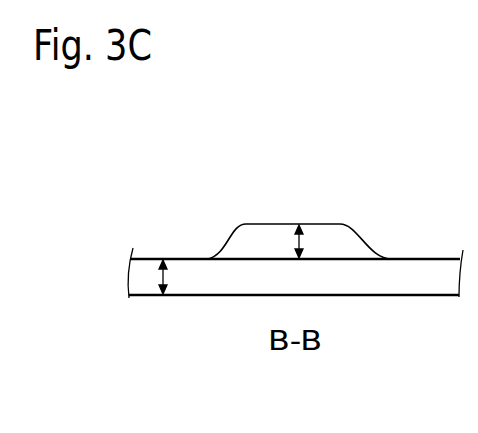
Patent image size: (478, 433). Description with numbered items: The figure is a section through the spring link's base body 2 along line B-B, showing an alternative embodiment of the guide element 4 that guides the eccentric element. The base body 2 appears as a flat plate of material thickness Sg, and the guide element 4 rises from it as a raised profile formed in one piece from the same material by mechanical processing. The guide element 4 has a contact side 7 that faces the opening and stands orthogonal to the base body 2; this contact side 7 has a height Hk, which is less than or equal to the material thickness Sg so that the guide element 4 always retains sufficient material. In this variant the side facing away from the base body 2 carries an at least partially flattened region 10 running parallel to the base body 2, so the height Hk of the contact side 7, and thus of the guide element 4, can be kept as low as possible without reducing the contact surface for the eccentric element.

The base body 2 is at (415, 270).
The guide element 4 is at (366, 244).
The contact side 7 is at (255, 250).
The flattened region 10 is at (283, 223).
The height of the contact side Hk is at (303, 242).
The material thickness of the base body Sg is at (167, 277).